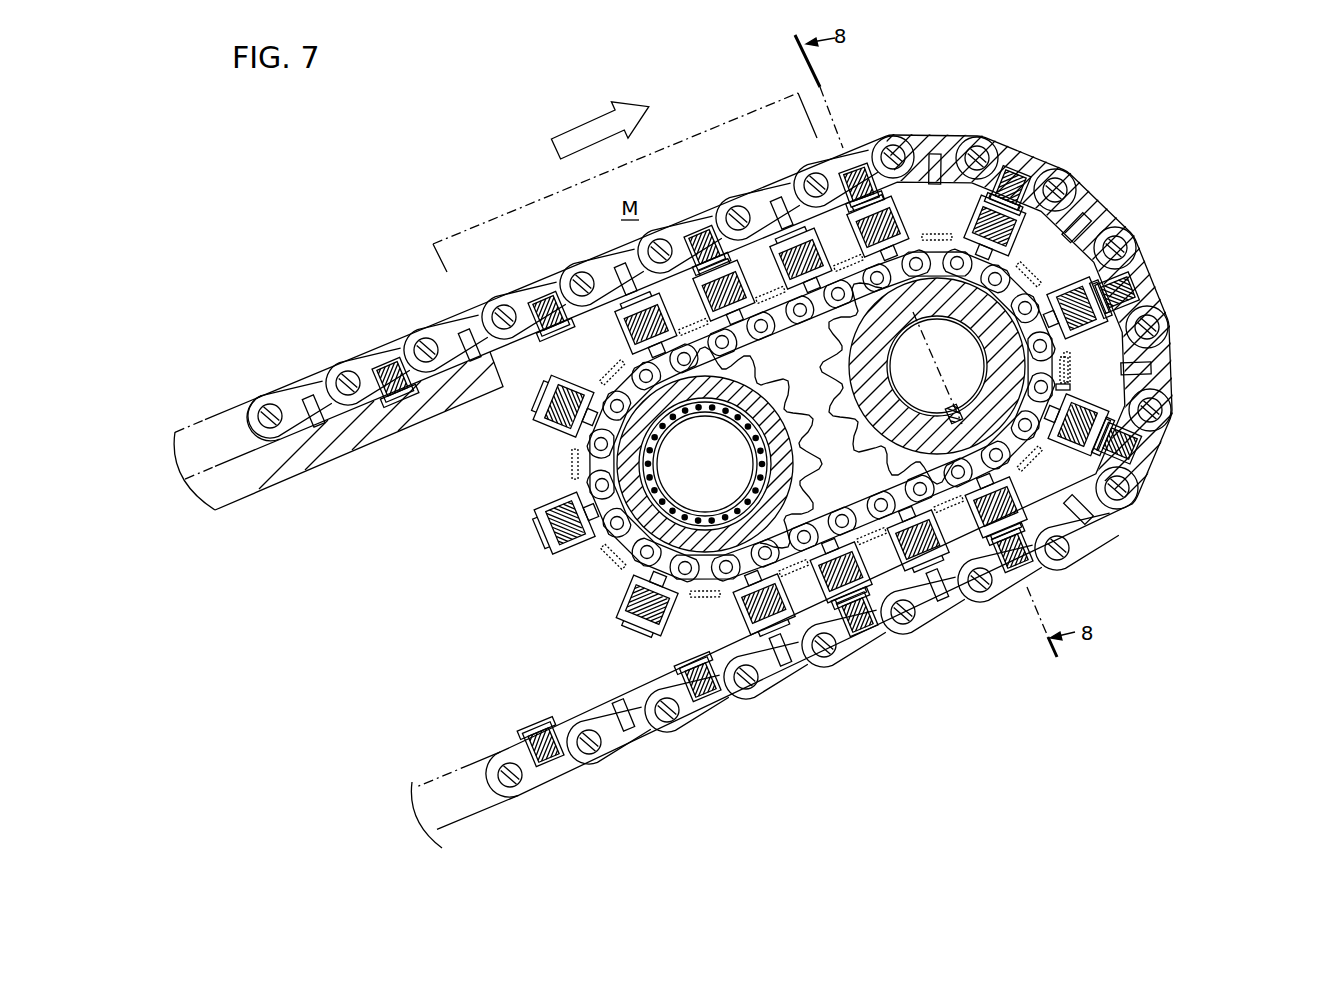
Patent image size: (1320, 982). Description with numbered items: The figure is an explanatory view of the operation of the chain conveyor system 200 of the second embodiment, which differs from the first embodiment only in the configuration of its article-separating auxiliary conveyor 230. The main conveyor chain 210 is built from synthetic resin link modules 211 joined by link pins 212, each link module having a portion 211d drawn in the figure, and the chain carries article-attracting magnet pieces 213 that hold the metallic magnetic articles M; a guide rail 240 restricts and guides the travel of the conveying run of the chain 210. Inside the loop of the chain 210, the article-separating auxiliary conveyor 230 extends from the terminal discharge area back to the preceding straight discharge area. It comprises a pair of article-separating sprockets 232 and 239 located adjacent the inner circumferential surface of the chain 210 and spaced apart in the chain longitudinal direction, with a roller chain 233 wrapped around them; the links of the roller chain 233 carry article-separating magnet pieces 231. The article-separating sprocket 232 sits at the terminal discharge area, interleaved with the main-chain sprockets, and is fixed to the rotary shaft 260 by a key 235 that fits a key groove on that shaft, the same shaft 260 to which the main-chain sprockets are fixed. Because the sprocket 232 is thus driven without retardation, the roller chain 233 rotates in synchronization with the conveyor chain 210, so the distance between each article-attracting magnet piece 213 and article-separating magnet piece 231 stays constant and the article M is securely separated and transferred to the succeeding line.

The chain conveyor system 200 is at (1172, 101).
The main conveyor chain 210 is at (747, 468).
The link module 211 is at (352, 373).
The link plate 211d is at (378, 352).
The link pin 212 is at (423, 346).
The article-attracting magnet piece 213 is at (552, 770).
The article-separating auxiliary conveyor 230 is at (844, 416).
The article-separating magnet piece 231 is at (557, 536).
The article-separating sprocket 232 is at (1128, 352).
The roller chain 233 is at (605, 560).
The key 235 is at (1050, 388).
The article-separating sprocket 239 is at (547, 520).
The guide rail 240 is at (343, 452).
The rotary shaft 260 is at (942, 366).